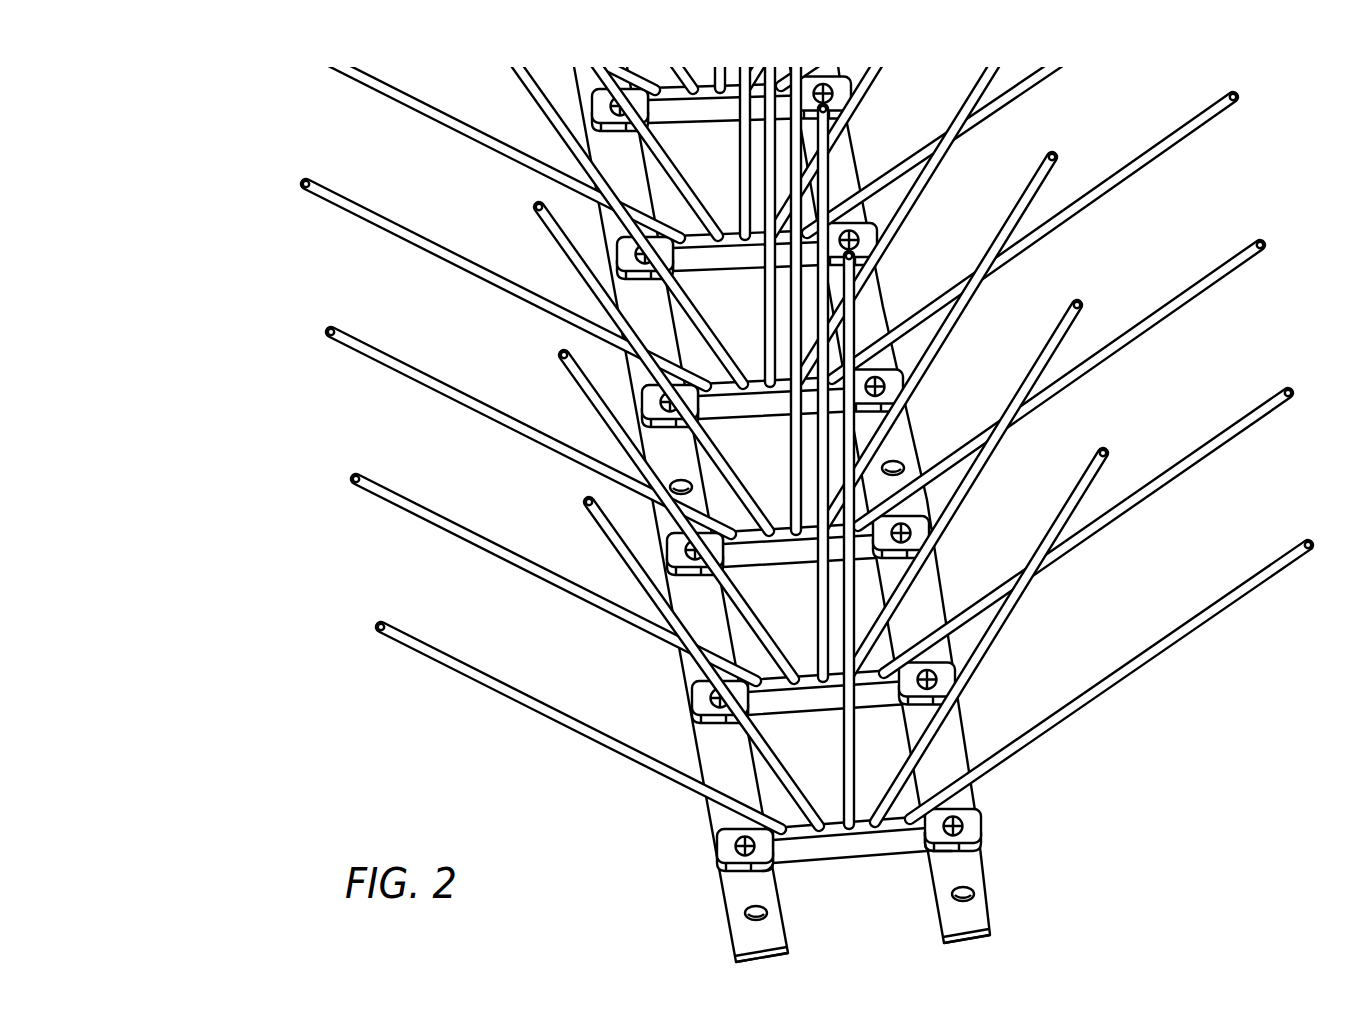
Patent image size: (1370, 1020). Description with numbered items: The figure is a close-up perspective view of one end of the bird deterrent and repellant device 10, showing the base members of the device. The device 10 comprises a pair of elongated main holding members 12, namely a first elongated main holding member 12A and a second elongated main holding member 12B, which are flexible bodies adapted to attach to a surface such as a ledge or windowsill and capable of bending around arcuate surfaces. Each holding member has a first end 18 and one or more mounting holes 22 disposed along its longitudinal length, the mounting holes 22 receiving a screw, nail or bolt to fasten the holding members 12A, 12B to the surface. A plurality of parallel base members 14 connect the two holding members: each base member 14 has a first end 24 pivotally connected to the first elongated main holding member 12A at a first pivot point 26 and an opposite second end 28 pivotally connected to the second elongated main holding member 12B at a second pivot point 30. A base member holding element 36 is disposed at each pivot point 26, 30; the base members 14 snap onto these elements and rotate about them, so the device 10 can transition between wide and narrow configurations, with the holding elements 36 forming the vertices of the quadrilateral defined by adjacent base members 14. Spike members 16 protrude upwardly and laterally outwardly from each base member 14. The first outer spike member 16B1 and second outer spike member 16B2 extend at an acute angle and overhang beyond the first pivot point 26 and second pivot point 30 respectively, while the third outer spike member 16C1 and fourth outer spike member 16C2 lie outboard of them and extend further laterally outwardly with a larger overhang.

The bird deterrent and repellant device 10 is at (238, 189).
The pair of elongated main holding members 12 is at (819, 508).
The first elongated main holding member 12A is at (679, 508).
The second elongated main holding member 12B is at (927, 496).
The base members 14 is at (848, 846).
The spike members 16 is at (804, 414).
The first outer spike member 16B1 is at (708, 664).
The second outer spike member 16B2 is at (1013, 623).
The third outer spike member 16C1 is at (597, 736).
The fourth outer spike member 16C2 is at (1165, 645).
The first end 18 is at (968, 942).
The mounting holes 22 is at (895, 462).
The first end 24 is at (754, 860).
The first pivot point 26 is at (776, 868).
The second end 28 is at (954, 860).
The second pivot point 30 is at (952, 849).
The base member holding element 36 is at (709, 706).